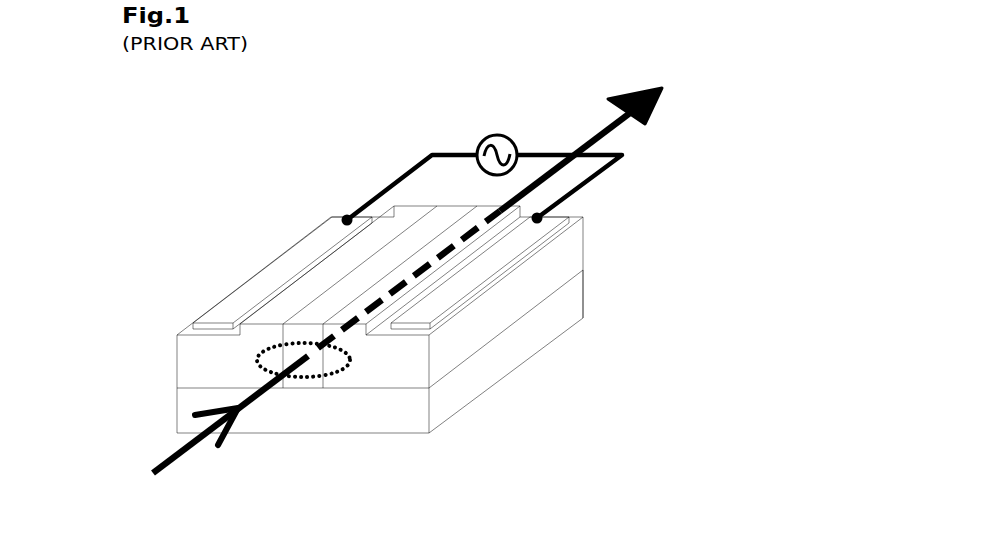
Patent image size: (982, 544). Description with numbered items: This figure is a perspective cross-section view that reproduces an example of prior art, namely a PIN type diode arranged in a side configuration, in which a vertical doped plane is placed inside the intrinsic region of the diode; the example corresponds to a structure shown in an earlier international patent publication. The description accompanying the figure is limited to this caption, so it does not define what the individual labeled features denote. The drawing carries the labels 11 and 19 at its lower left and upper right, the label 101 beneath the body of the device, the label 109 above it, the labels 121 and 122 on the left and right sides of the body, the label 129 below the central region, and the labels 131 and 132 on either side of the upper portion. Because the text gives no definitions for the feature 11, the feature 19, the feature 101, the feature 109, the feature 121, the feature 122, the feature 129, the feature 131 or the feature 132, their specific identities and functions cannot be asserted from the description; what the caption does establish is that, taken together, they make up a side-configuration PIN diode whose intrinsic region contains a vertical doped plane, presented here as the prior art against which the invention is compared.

The input light 11 is at (180, 450).
The output light 19 is at (597, 125).
The substrate 101 is at (373, 417).
The signal source 109 is at (486, 136).
The first cladding layer 121 is at (193, 362).
The second cladding layer 122 is at (505, 305).
The optical waveguide core 129 is at (317, 383).
The first electrode 131 is at (262, 270).
The second electrode 132 is at (528, 238).